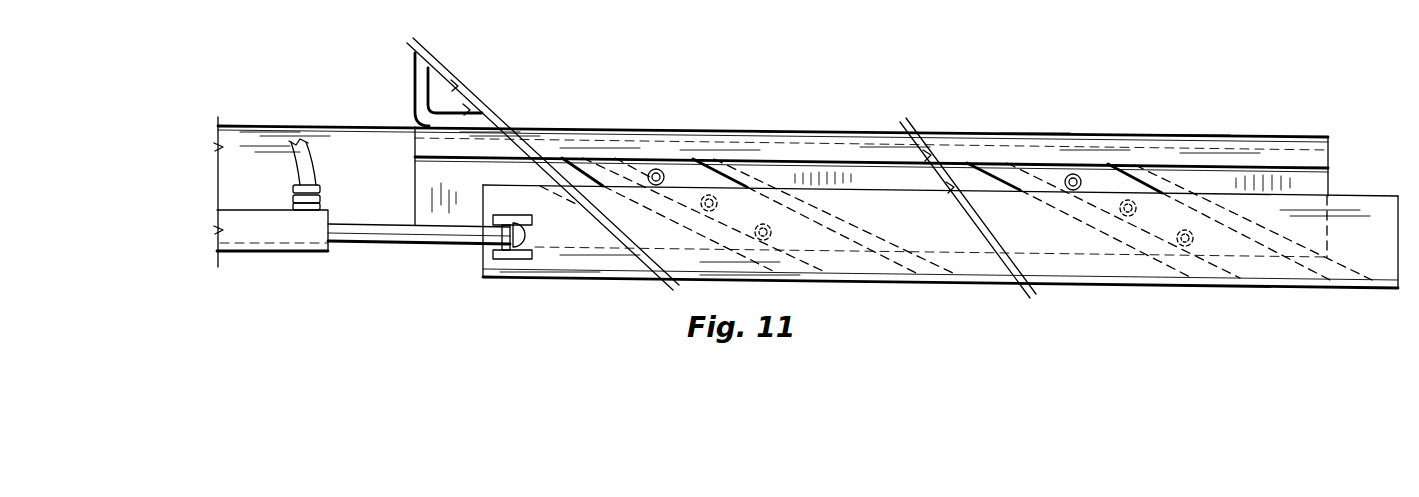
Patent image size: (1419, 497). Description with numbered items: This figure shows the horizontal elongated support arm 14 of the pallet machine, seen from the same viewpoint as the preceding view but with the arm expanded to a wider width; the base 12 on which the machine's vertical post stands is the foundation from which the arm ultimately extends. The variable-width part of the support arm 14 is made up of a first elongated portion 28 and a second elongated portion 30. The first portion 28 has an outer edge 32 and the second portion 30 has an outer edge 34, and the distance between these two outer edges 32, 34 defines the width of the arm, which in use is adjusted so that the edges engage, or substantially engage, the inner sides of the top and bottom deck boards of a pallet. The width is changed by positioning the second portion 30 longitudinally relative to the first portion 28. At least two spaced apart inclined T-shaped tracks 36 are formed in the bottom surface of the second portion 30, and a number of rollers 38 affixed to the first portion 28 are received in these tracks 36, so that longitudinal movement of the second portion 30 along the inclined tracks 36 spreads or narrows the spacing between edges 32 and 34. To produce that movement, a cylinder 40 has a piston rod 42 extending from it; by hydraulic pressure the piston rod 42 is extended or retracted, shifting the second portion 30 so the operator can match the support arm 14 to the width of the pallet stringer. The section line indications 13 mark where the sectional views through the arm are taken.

The support arm 14 is at (796, 116).
The first elongated portion 28 is at (1296, 156).
The second elongated portion 30 is at (1370, 264).
The outer edge 32 is at (962, 133).
The outer edge 34 is at (918, 282).
The tracks 36 is at (789, 213).
The rollers 38 is at (709, 195).
The cylinder 40 is at (272, 238).
The piston rod 42 is at (435, 232).
The base 12 is at (1205, 371).
The section line 13- 13 is at (1164, 193).